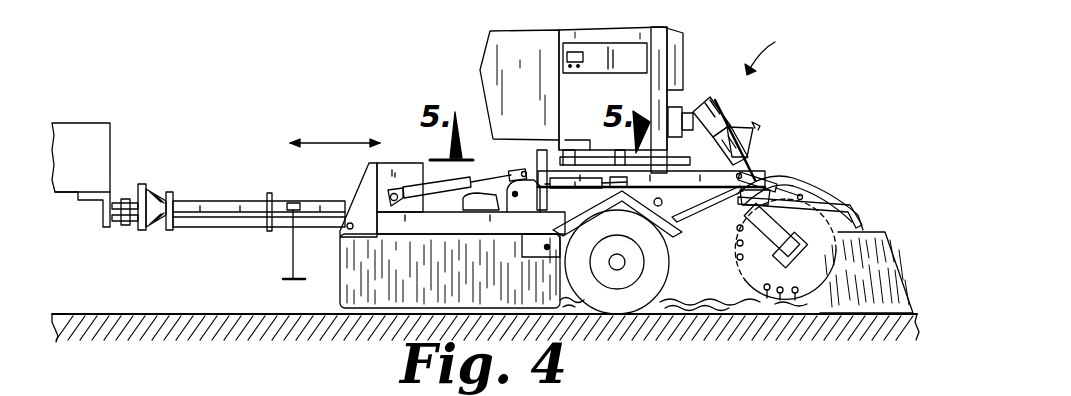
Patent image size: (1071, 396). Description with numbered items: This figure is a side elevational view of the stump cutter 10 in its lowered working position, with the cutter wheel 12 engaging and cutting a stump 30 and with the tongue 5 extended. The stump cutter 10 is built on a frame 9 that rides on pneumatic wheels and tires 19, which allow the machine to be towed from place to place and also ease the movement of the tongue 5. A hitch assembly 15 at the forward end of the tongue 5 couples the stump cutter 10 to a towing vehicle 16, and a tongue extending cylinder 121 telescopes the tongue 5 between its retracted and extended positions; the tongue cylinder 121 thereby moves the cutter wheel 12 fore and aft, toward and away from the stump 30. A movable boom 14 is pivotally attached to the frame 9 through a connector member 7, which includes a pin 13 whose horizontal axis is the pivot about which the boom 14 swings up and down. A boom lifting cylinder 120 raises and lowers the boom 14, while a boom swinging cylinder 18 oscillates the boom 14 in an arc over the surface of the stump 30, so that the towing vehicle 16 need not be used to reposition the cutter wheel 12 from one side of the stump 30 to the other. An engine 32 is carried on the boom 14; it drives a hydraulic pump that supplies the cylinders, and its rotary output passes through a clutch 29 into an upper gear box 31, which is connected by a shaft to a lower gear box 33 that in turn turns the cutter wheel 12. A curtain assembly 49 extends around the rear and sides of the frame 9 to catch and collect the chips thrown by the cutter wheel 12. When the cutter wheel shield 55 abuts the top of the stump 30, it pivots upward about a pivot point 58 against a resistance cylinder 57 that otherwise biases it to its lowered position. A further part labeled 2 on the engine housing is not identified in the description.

The cab 2 is at (617, 150).
The tongue 5 is at (151, 187).
The connector member 7 is at (540, 236).
The frame 9 is at (450, 271).
The stump cutter 10 is at (773, 49).
The cutter wheel 12 is at (810, 292).
The pin 13 is at (547, 250).
The boom 14 is at (760, 160).
The hitch assembly 15 is at (123, 236).
The towing vehicle 16 is at (92, 165).
The boom swinging cylinder 18 is at (587, 190).
The pneumatic wheels and tires 19 is at (672, 270).
The clutch 29 is at (686, 104).
The stump 30 is at (887, 233).
The gear box 31 is at (716, 99).
The engine 32 is at (602, 103).
The lower gear box 33 is at (817, 217).
The curtain assembly 49 is at (430, 290).
The cutter wheel shield 55 is at (820, 187).
The resistance cylinder 57 is at (767, 183).
The pivot point 58 is at (740, 203).
The boom lifting cylinder 120 is at (420, 187).
The tongue extending cylinder 121 is at (282, 230).